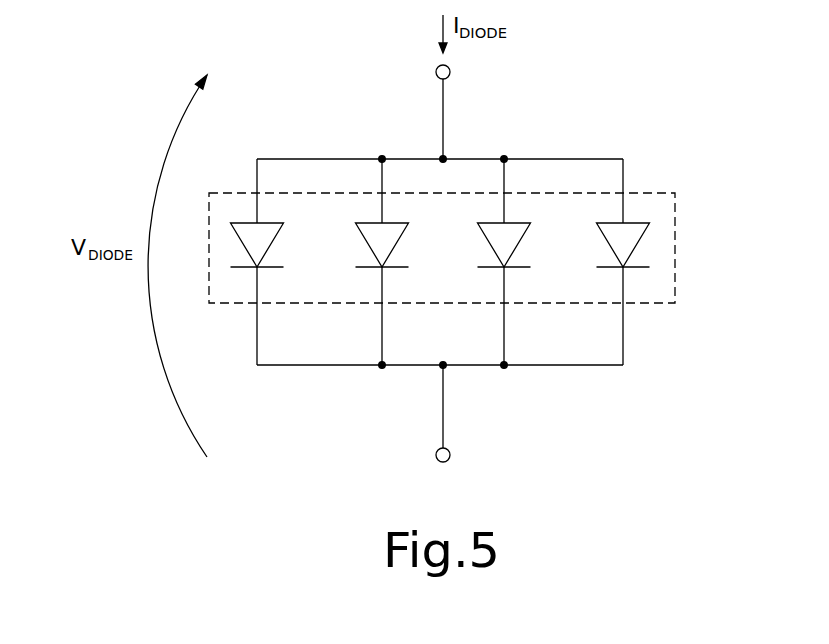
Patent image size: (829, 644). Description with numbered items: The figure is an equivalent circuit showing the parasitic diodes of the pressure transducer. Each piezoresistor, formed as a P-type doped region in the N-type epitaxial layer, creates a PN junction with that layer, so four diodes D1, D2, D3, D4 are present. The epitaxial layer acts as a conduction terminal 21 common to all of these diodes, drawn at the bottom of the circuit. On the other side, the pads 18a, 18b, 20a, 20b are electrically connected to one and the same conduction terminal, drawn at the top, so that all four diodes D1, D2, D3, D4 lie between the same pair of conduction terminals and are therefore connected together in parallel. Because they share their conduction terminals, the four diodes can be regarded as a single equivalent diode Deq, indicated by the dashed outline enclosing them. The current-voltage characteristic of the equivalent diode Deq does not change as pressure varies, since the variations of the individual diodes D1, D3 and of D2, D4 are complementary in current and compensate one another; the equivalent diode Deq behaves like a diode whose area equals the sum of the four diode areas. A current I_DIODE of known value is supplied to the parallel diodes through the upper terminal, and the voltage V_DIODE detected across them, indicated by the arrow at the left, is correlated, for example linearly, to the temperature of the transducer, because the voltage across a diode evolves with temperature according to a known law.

The pad 18a is at (556, 112).
The pad 18b is at (556, 112).
The pad 20a is at (556, 112).
The pad 20b is at (450, 73).
The conduction terminal 21 is at (451, 451).
The diode D1 is at (270, 248).
The diode D2 is at (365, 242).
The diode D3 is at (487, 240).
The diode D4 is at (604, 236).
The equivalent diode Deq is at (676, 240).